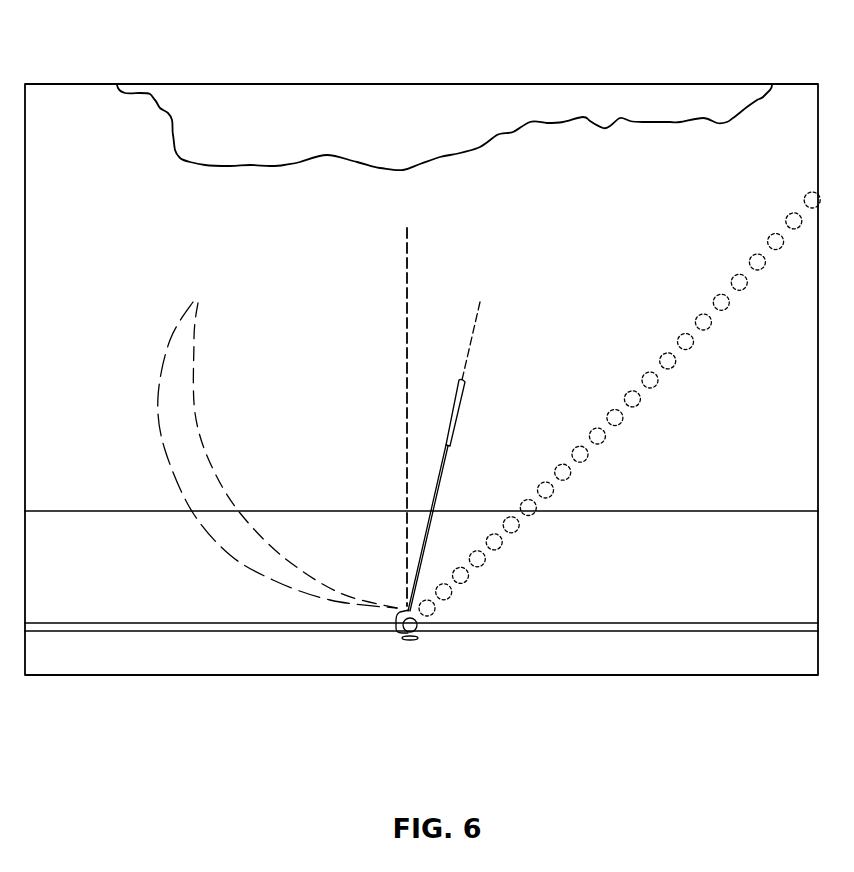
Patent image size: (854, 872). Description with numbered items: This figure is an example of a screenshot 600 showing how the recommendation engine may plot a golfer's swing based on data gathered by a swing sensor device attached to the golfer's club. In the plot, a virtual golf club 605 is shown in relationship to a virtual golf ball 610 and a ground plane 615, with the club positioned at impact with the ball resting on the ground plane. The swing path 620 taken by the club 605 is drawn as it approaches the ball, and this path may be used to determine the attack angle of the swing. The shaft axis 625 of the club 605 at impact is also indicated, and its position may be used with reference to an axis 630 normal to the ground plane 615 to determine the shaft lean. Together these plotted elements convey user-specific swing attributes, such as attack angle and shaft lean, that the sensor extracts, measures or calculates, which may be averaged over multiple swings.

The screenshot 600 is at (718, 77).
The virtual golf club 605 is at (447, 460).
The virtual golf ball 610 is at (419, 631).
The ground plane 615 is at (582, 631).
The swing path 620 is at (198, 303).
The shaft axis 625 is at (480, 315).
The axis normal to the ground plane 630 is at (407, 241).